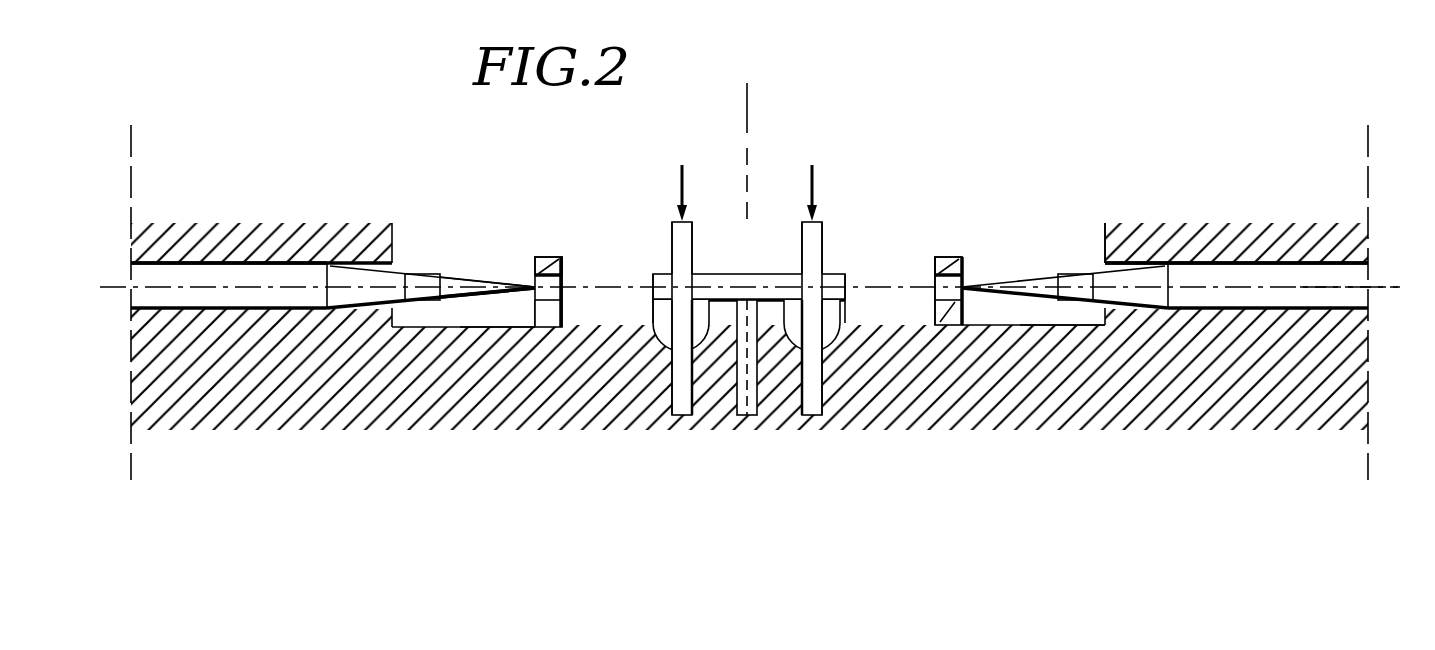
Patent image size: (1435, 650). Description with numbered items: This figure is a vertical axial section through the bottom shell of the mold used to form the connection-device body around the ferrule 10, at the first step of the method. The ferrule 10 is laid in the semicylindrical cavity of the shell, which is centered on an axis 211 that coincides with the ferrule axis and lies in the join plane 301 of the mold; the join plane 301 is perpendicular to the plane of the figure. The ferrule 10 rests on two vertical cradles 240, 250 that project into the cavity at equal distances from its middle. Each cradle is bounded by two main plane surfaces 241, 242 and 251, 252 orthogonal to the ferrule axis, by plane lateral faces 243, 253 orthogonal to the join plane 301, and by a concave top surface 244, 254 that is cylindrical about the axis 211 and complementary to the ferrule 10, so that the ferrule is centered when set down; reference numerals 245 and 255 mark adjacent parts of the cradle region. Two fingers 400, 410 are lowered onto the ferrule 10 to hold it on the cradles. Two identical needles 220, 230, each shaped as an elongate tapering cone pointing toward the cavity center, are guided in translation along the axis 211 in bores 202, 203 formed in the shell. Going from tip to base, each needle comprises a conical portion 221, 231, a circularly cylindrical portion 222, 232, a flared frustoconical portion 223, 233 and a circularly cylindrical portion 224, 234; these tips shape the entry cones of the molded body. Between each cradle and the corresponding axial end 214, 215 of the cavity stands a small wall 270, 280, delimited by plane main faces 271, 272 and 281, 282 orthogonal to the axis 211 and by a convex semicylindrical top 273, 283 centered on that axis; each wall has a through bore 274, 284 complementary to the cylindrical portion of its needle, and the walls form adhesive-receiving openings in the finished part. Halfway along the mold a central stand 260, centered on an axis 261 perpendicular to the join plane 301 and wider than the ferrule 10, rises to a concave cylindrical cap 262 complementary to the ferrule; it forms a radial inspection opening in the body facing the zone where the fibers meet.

The ferrule 10 is at (708, 276).
The bore 202 is at (1230, 264).
The bore 203 is at (215, 264).
The axis 211 is at (1382, 290).
The axial end of the cavity 214 is at (1105, 314).
The axial end of the cavity 215 is at (392, 314).
The needle 220 is at (1283, 274).
The conical portion 221 is at (1003, 284).
The circularly cylindrical portion 222 is at (1078, 274).
The flared frustoconical portion 223 is at (1132, 277).
The circularly cylindrical portion 224 is at (1298, 296).
The needle 230 is at (188, 278).
The conical portion 231 is at (476, 281).
The circularly cylindrical portion 232 is at (425, 274).
The flared frustoconical portion 233 is at (341, 273).
The circularly cylindrical portion 234 is at (157, 296).
The cradle 240 is at (819, 421).
The main plane surface 241 is at (796, 414).
The main plane surface 242 is at (822, 400).
The plane lateral face 243 is at (812, 364).
The top surface 244 is at (816, 285).
The body end 245 is at (835, 318).
The cradle 250 is at (676, 420).
The main plane surface 251 is at (672, 399).
The main plane surface 252 is at (698, 416).
The plane lateral face 253 is at (680, 364).
The top surface 254 is at (681, 285).
The body end 255 is at (657, 319).
The central stand 260 is at (749, 417).
The axis 261 is at (744, 131).
The concave cylindrical cap 262 is at (743, 298).
The wall 270 is at (953, 310).
The main face 271 is at (935, 309).
The main face 272 is at (962, 313).
The convex semicylindrical top 273 is at (952, 254).
The through bore 274 is at (942, 280).
The wall 280 is at (554, 305).
The main face 281 is at (535, 313).
The main face 282 is at (562, 313).
The convex semicylindrical top 283 is at (541, 258).
The through bore 284 is at (565, 281).
The join plane 301 is at (115, 286).
The finger 400 is at (672, 221).
The finger 410 is at (818, 221).